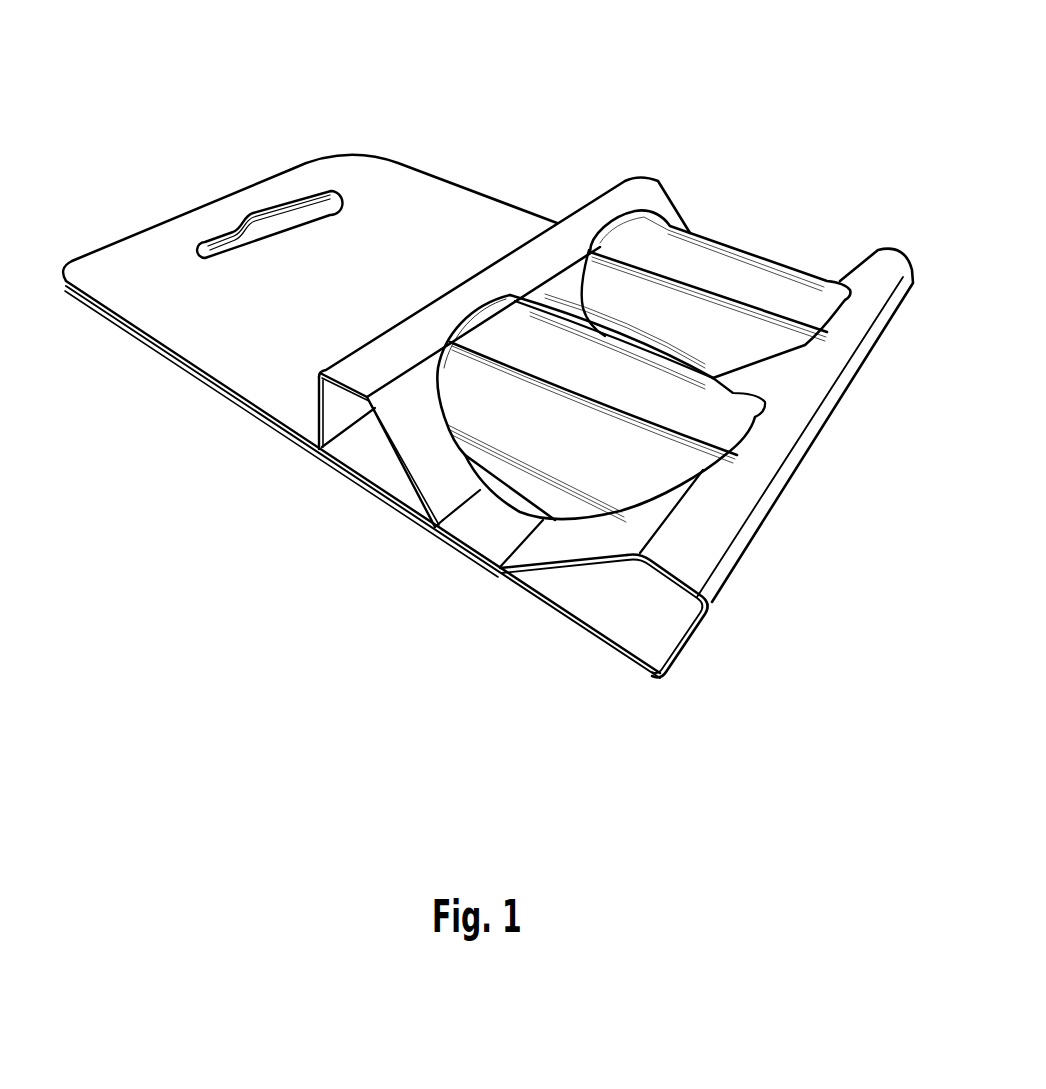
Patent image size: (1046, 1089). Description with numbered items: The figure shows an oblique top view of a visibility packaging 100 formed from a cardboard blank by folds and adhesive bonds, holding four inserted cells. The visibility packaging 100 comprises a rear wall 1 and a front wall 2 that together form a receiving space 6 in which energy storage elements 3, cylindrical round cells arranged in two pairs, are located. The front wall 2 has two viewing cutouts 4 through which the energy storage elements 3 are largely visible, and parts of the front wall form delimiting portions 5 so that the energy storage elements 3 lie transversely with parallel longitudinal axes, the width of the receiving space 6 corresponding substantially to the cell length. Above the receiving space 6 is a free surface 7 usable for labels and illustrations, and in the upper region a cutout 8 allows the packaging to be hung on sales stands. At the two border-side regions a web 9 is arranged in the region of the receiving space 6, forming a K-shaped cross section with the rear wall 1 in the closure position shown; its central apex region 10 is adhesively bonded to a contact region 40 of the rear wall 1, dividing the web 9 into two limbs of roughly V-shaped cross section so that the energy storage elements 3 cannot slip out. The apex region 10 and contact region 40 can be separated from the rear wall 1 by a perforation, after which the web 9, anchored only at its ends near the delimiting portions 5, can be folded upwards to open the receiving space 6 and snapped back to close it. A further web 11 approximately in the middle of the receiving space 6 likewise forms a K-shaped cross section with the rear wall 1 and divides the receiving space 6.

The visibility packaging 100 is at (649, 128).
The rear wall 1 is at (380, 507).
The front wall 2 is at (812, 364).
The energy storage elements 3 is at (660, 307).
The viewing cutouts 4 is at (786, 294).
The delimiting portions 5 is at (509, 282).
The receiving space 6 is at (642, 608).
The free surface 7 is at (385, 217).
The cutout 8 is at (257, 230).
The web 9 is at (413, 427).
The apex region 10 is at (490, 533).
The further web 11 is at (557, 290).
The contact region 40 is at (503, 590).